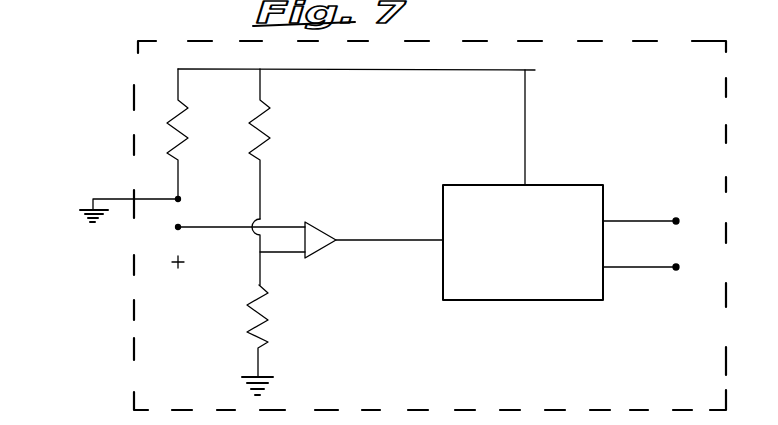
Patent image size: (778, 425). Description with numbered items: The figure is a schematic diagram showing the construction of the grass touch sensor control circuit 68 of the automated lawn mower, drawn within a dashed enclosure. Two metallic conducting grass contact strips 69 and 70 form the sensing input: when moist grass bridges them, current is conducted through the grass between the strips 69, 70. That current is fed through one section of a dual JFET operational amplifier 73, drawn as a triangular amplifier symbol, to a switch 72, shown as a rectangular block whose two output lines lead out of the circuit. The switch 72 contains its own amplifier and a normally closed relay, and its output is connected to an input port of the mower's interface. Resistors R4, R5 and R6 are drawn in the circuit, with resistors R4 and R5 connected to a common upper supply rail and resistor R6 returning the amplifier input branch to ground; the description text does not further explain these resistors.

The grass touch sensor control circuit 68 is at (152, 47).
The metallic conducting grass contact strip 69 is at (178, 228).
The metallic conducting grass contact strip 70 is at (94, 211).
The TY-38 switch 72 is at (553, 300).
The dual LF353 JFET operational amplifier 73 is at (318, 250).
The resistor R4 is at (186, 161).
The resistor R5 is at (266, 161).
The resistor R6 is at (268, 323).